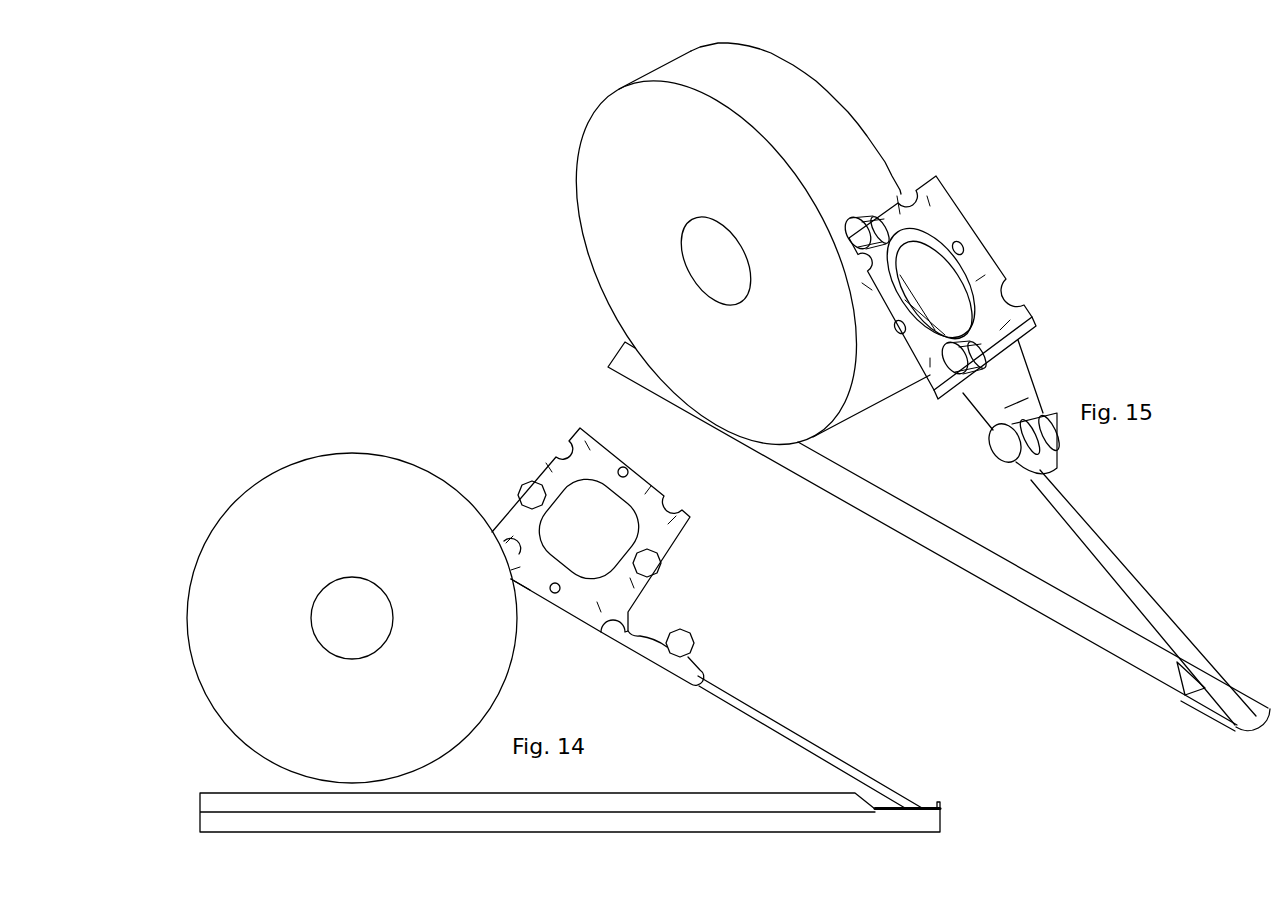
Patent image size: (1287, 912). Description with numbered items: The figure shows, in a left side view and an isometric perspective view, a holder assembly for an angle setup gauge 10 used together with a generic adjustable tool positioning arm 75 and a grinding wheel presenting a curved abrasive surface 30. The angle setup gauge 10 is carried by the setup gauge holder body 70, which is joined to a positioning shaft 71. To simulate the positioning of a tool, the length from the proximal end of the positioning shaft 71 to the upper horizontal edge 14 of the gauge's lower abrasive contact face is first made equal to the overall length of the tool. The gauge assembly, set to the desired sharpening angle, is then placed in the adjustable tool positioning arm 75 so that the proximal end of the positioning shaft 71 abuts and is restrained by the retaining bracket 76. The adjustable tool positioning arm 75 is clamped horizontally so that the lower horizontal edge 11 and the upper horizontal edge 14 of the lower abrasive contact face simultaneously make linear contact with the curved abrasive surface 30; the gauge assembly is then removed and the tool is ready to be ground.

In FIG. 14, the curved abrasive surface 30 is at (342, 478).
In FIG. 15, the curved abrasive surface 30 is at (606, 137).
In FIG. 14, the angle setup gauge 10 is at (538, 472).
In FIG. 15, the angle setup gauge 10 is at (963, 217).
In FIG. 14, the upper horizontal edge of setup gauge lower abrasive contact face 14 is at (505, 575).
In FIG. 14, the lower horizontal edge of setup gauge lower abrasive contact face 11 is at (508, 587).
In FIG. 14, the setup gauge holder body 70 is at (642, 642).
In FIG. 15, the setup gauge holder body 70 is at (993, 390).
In FIG. 14, the positioning shaft for setup gauge holder 71 is at (793, 732).
In FIG. 15, the positioning shaft for setup gauge holder 71 is at (1118, 563).
In FIG. 14, the adjustable tool positioning arm 75 is at (497, 815).
In FIG. 15, the adjustable tool positioning arm 75 is at (995, 576).
In FIG. 14, the retaining bracket of an adjustable tool positioning arm 76 is at (938, 818).
In FIG. 15, the retaining bracket of an adjustable tool positioning arm 76 is at (1207, 705).